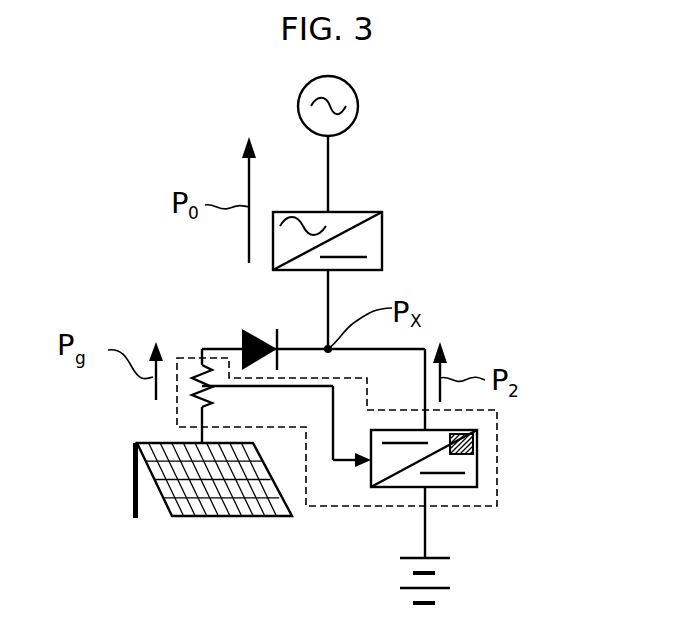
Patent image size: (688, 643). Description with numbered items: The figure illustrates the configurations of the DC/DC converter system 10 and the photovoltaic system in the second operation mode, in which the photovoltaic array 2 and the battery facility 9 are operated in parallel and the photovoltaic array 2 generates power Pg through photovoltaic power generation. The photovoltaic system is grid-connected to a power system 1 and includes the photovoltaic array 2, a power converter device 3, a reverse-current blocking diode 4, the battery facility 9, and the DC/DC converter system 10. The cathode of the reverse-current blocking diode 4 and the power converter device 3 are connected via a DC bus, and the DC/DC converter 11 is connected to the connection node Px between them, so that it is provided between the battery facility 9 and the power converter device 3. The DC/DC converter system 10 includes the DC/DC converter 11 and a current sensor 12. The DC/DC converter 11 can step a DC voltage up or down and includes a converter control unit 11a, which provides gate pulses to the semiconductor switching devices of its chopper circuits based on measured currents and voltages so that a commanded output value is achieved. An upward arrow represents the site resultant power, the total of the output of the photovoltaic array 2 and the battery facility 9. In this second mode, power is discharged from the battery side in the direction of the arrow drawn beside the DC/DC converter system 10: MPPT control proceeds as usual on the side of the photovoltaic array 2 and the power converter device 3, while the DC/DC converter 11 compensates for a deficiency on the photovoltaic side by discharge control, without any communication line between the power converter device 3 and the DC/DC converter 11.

The power system 1 is at (359, 108).
The power converter device 3 is at (382, 228).
The reverse-current blocking diode 4 is at (240, 328).
The current sensor 12 is at (197, 372).
The photovoltaic array 2 is at (140, 443).
The DC/DC converter system 10 is at (497, 418).
The DC/DC converter 11 is at (477, 483).
The converter control unit 11a is at (473, 445).
The battery facility 9 is at (452, 578).